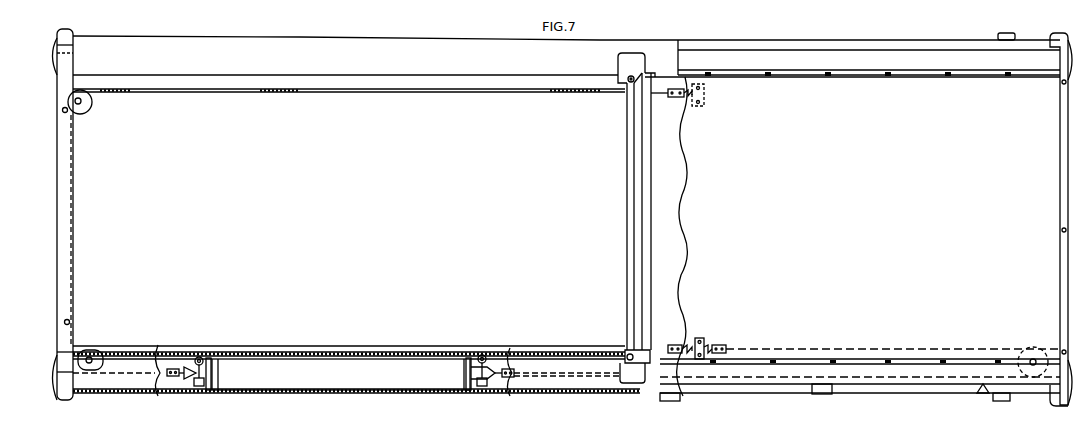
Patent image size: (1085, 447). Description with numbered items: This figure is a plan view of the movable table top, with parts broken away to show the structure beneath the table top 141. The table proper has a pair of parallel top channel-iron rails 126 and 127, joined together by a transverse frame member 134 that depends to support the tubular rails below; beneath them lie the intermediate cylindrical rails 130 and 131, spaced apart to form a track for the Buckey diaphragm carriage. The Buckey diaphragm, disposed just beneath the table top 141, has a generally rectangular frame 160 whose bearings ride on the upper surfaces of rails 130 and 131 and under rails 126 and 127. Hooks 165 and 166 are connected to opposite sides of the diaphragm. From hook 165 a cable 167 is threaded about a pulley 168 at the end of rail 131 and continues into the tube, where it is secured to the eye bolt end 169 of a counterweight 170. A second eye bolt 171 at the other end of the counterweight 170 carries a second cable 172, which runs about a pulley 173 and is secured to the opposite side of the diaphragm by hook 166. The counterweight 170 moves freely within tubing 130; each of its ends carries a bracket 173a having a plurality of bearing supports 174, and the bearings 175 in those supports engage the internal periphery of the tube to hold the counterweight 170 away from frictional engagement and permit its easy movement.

The top rail 126 is at (954, 380).
The top rail 127 is at (963, 52).
The intermediate tubular rail 130 is at (897, 394).
The intermediate tubular rail 131 is at (876, 41).
The transverse frame member 134 is at (1060, 112).
The table top 141 is at (800, 100).
The rectangular frame 160 is at (650, 240).
The hook 165 is at (706, 96).
The hook 166 is at (703, 340).
The cable 167 is at (380, 93).
The pulley 168 is at (92, 108).
The eye bolt end 169 is at (190, 376).
The counterweight 170 is at (291, 388).
The second eye bolt 171 is at (493, 379).
The second cable 172 is at (514, 378).
The pulley 173 is at (486, 356).
The bracket 173a is at (209, 358).
The bearing support 174 is at (199, 357).
The bearing 175 is at (179, 351).